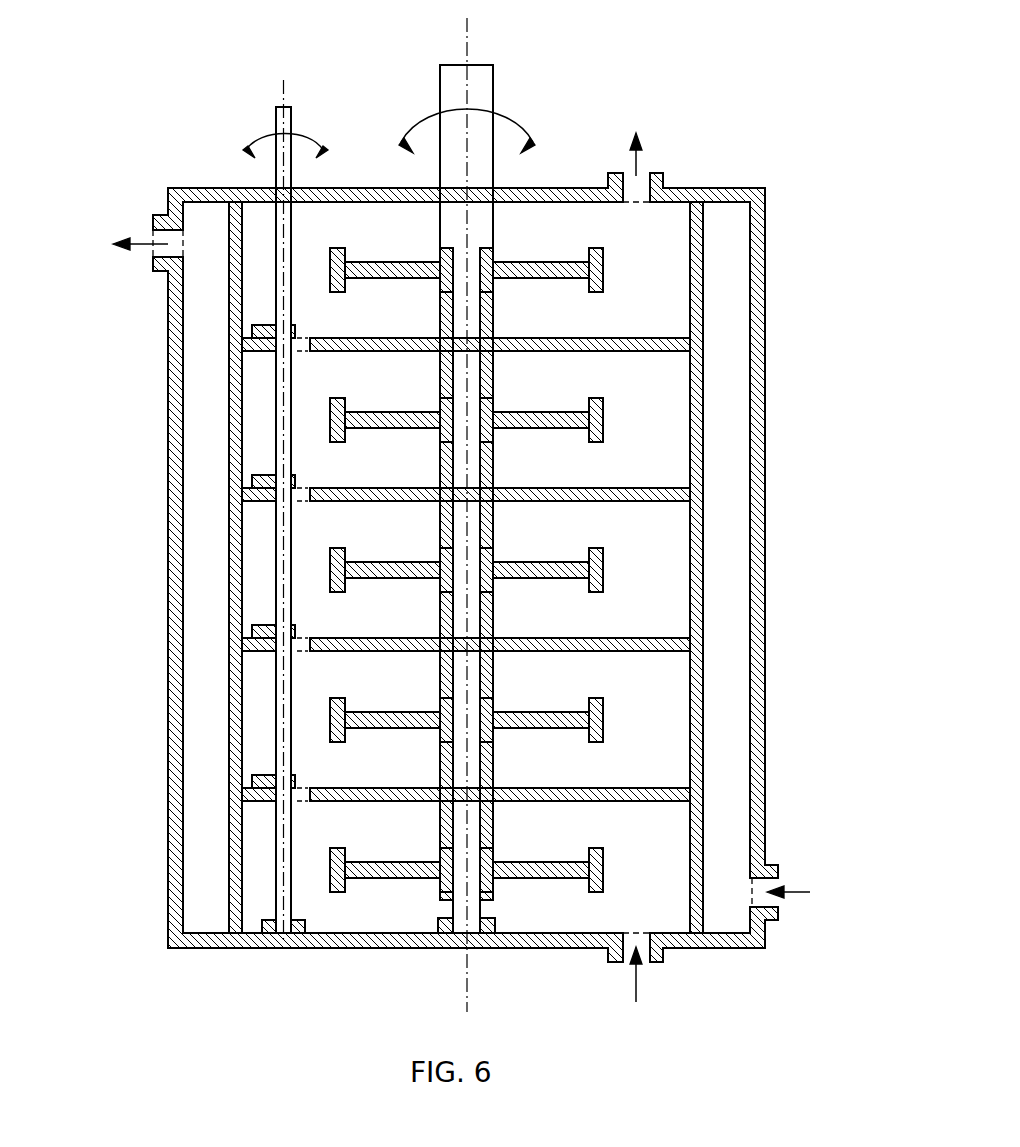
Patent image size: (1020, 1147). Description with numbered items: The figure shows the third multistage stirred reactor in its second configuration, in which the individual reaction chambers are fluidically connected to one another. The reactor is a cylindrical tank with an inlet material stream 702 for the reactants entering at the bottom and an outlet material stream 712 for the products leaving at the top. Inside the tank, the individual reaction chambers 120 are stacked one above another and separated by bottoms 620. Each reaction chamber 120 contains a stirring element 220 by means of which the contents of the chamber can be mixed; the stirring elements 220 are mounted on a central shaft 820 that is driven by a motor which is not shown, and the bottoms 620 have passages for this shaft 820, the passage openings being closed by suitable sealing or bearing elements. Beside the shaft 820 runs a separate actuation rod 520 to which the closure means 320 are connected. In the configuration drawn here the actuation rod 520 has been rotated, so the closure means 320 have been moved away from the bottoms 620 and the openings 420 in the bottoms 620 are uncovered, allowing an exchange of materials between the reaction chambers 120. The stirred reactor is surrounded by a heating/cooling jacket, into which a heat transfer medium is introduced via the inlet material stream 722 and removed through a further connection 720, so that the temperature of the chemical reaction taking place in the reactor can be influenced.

The reaction chamber 120 is at (262, 237).
The stirring element 220 is at (603, 270).
The closure means 320 is at (263, 325).
The opening 420 is at (300, 352).
The actuation rod 520 is at (275, 117).
The bottom 620 is at (565, 338).
The inlet material stream 702 is at (636, 985).
The outlet material stream 712 is at (637, 166).
The side outlet pipe 720 is at (152, 244).
The inlet material stream 722 is at (810, 892).
The central shaft 820 is at (493, 98).